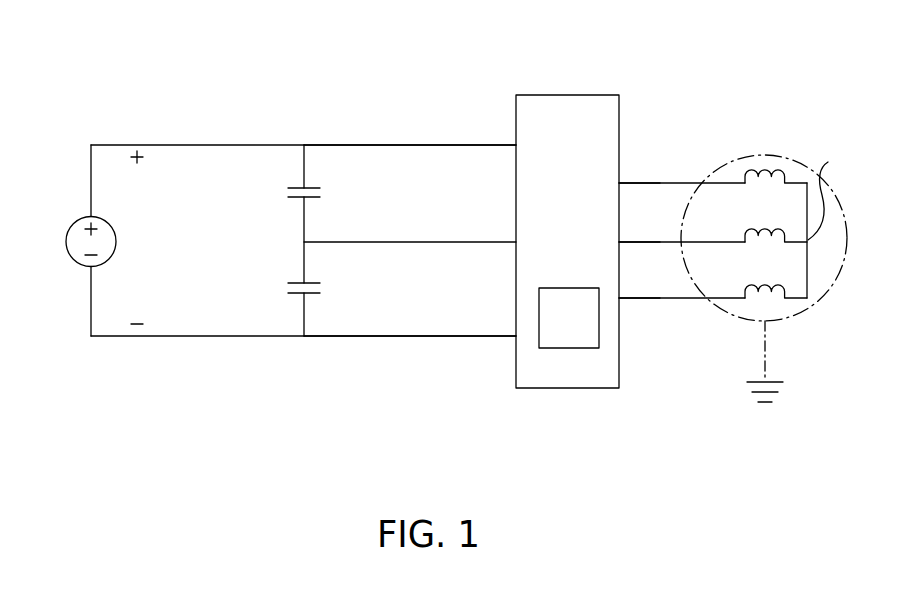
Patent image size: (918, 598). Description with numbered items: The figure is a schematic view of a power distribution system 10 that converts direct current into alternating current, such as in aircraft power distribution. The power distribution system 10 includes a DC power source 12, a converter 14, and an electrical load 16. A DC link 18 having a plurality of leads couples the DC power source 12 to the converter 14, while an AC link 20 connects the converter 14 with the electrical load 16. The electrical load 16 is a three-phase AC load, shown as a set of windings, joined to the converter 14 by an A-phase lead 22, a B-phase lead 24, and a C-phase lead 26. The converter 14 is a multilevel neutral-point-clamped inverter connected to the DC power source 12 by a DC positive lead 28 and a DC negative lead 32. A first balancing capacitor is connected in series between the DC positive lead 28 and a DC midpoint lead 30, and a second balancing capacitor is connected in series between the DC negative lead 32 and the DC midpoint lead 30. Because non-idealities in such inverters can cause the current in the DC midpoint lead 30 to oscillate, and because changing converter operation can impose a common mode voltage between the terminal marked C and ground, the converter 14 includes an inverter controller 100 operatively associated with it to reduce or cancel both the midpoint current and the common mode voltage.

The power distribution system 10 is at (270, 389).
The DC power source 12 is at (90, 267).
The converter 14 is at (562, 95).
The electrical load 16 is at (715, 304).
The DC link 18 is at (353, 88).
The AC link 20 is at (696, 75).
The A-phase lead 22 is at (658, 183).
The B-phase lead 24 is at (640, 242).
The C-phase lead 26 is at (652, 298).
The DC positive lead 28 is at (410, 145).
The DC midpoint lead 30 is at (457, 242).
The DC negative lead 32 is at (410, 336).
The inverter controller 100 is at (586, 326).